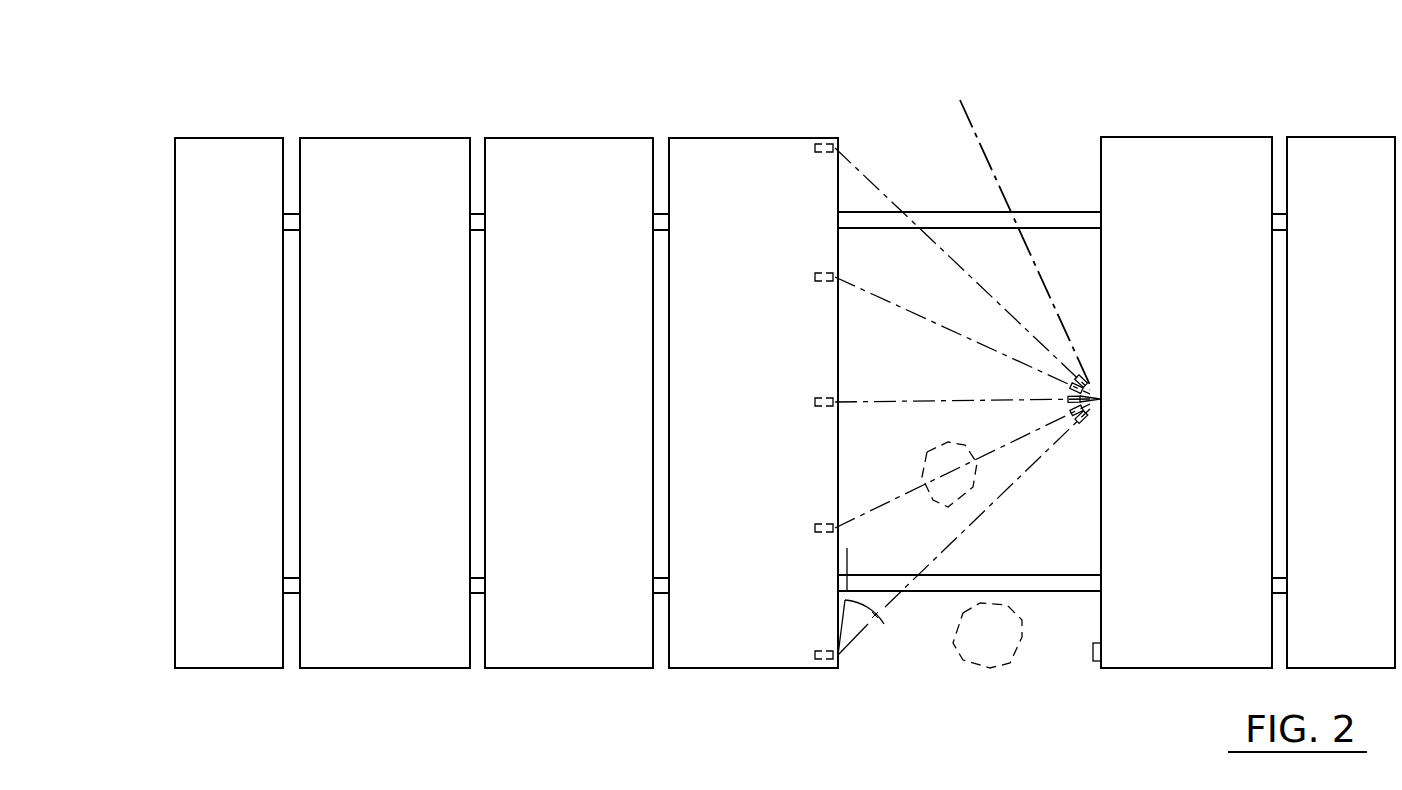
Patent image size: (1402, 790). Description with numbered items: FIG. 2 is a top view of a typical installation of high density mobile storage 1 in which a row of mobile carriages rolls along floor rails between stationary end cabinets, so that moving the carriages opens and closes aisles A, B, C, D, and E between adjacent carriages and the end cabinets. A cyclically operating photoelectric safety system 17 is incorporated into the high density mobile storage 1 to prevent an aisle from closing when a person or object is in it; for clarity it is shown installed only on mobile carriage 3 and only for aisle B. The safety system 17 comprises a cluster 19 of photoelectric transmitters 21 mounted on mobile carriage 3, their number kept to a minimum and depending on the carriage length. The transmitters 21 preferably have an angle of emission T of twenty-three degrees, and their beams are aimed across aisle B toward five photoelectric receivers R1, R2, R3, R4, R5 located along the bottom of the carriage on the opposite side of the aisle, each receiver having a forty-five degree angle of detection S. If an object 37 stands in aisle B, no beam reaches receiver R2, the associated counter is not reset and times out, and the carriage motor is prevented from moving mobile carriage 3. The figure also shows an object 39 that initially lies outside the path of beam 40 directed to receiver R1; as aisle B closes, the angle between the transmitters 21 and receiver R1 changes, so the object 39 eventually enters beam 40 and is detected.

The high density mobile storage 1 is at (574, 672).
The mobile carriage 3 is at (1193, 672).
The photoelectric safety system 17 is at (1108, 398).
The cluster 19 is at (1108, 406).
The photoelectric transmitters 21 is at (1093, 370).
The object 37 is at (932, 508).
The object 39 is at (993, 668).
The beam 40 is at (893, 598).
The aisle A is at (1279, 142).
The aisle B is at (1022, 519).
The aisle C is at (662, 147).
The aisle D is at (477, 147).
The aisle E is at (293, 147).
The photoelectric receiver R1 is at (815, 655).
The photoelectric receiver R2 is at (815, 528).
The photoelectric receiver R3 is at (815, 402).
The photoelectric receiver R4 is at (815, 277).
The photoelectric receiver R5 is at (828, 143).
The angle of detection S is at (864, 627).
The angle of emission T is at (1004, 301).